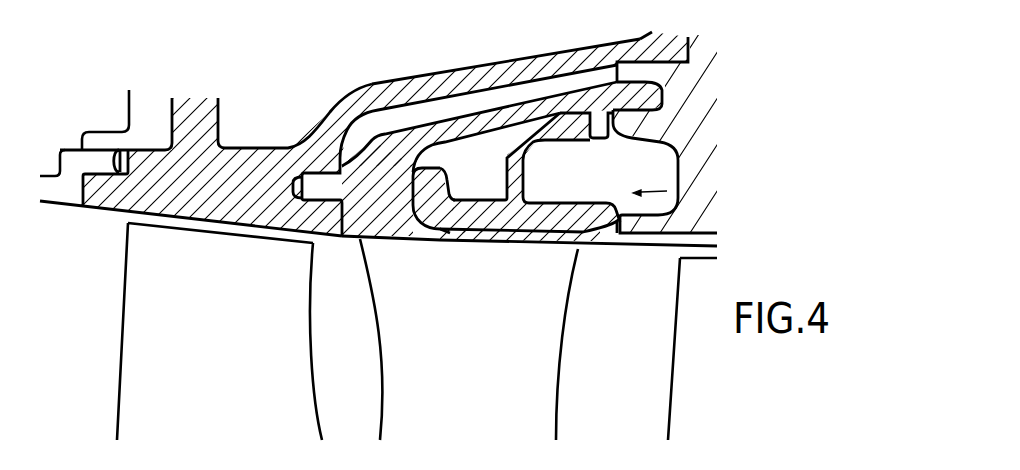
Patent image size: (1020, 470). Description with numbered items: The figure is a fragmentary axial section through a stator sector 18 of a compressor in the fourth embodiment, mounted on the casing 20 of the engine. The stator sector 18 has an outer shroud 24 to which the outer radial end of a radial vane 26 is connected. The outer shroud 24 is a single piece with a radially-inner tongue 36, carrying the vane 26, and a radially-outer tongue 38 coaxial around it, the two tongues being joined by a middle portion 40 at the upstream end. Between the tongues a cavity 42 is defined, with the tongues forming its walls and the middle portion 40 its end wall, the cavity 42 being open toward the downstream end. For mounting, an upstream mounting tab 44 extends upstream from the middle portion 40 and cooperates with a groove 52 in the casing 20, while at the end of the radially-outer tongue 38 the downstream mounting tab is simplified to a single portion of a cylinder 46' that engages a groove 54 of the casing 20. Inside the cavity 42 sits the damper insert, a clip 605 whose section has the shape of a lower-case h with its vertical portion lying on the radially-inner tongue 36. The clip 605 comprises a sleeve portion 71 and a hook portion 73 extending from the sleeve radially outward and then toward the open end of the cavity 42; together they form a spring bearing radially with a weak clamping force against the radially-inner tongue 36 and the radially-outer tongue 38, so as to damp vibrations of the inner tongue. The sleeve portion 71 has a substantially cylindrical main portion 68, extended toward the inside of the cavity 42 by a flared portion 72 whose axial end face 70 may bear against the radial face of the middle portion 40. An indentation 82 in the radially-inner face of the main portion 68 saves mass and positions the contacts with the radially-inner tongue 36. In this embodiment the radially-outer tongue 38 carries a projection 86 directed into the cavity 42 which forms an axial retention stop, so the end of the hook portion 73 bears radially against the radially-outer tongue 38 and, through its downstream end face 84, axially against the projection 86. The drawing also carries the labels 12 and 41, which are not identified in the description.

The rotor blade 12 is at (140, 340).
The stator sector 18 is at (571, 383).
The casing 20 is at (262, 168).
The outer shroud 24 is at (375, 108).
The radial vane 26 is at (564, 310).
The radially-inner tongue 36 is at (490, 237).
The radially-outer tongue 38 is at (457, 150).
The middle portion 40 is at (326, 125).
The cooling air flow 41 is at (370, 131).
The cavity 42 is at (395, 123).
The upstream mounting tab 44 is at (318, 205).
The single portion of a cylinder 46' is at (652, 20).
The groove 52 is at (300, 180).
The groove 54 is at (667, 84).
The main portion 68 is at (563, 215).
The axial end face 70 is at (408, 216).
The sleeve portion 71 is at (597, 201).
The flared portion 72 is at (428, 235).
The hook portion 73 is at (505, 138).
The indentation 82 is at (537, 237).
The downstream end face 84 is at (600, 127).
The projection 86 is at (615, 120).
The clip 605 is at (680, 192).